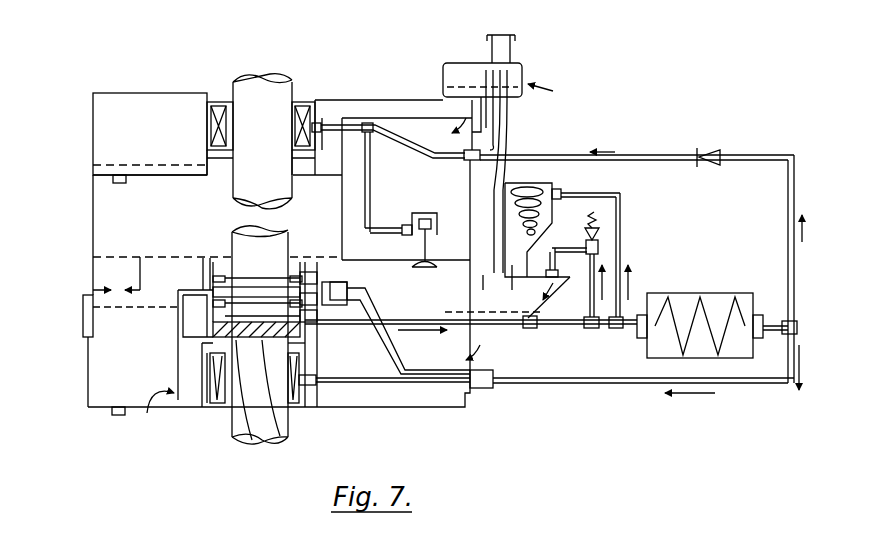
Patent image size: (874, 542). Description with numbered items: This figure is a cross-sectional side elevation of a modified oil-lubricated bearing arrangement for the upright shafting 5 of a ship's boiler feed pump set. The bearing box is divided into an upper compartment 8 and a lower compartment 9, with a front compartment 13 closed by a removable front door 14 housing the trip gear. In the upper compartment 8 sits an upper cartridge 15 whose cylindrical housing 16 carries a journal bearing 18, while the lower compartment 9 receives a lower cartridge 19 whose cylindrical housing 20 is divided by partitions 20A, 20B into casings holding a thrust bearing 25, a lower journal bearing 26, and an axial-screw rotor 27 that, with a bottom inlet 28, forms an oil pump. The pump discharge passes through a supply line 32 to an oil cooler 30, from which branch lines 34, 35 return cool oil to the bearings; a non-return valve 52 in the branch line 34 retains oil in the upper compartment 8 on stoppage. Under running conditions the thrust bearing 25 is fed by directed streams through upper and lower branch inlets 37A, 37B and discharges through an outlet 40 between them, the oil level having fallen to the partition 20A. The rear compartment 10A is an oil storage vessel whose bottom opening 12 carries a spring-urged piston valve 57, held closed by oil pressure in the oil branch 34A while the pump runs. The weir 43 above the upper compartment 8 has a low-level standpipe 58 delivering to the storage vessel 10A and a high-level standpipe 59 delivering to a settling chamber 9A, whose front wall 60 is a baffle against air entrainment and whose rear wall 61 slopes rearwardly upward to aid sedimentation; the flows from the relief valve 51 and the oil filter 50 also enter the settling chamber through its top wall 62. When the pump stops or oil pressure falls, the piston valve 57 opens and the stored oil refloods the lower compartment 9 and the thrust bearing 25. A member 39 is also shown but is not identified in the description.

The shafting 5 is at (249, 84).
The upper compartment 8 is at (117, 128).
The lower compartment 9 is at (425, 394).
The settling chamber 9A is at (500, 356).
The rear compartment 10A is at (459, 186).
The opening 12 is at (428, 240).
The front compartment 13 is at (122, 219).
The front door 14 is at (83, 318).
The upper cartridge 15 is at (207, 104).
The cylindrical housing 16 is at (197, 169).
The journal bearing 18 is at (302, 110).
The lower cartridge 19 is at (320, 378).
The cylindrical housing 20 is at (318, 404).
The partition 20A is at (213, 314).
The partition 20B is at (297, 475).
The thrust bearing 25 is at (219, 276).
The journal bearing 26 is at (220, 405).
The axial-screw rotor 27 is at (290, 414).
The bottom inlet 28 is at (150, 416).
The oil cooler 30 is at (723, 303).
The supply line 32 is at (560, 328).
The branch line 34 is at (797, 203).
The oil branch 34A is at (364, 188).
The branch line 35 is at (600, 384).
The upper branch inlet 37A is at (395, 283).
The lower branch inlet 37B is at (423, 313).
The support 39 is at (205, 405).
The outlet 40 is at (198, 292).
The weir 43 is at (488, 70).
The oil filter 50 is at (553, 191).
The relief valve 51 is at (600, 238).
The non-return valve 52 is at (712, 153).
The piston valve 57 is at (410, 237).
The low-level standpipe 58 is at (495, 112).
The high-level standpipe 59 is at (507, 126).
The front wall 60 is at (470, 318).
The rear wall 61 is at (566, 314).
The top wall 62 is at (580, 240).